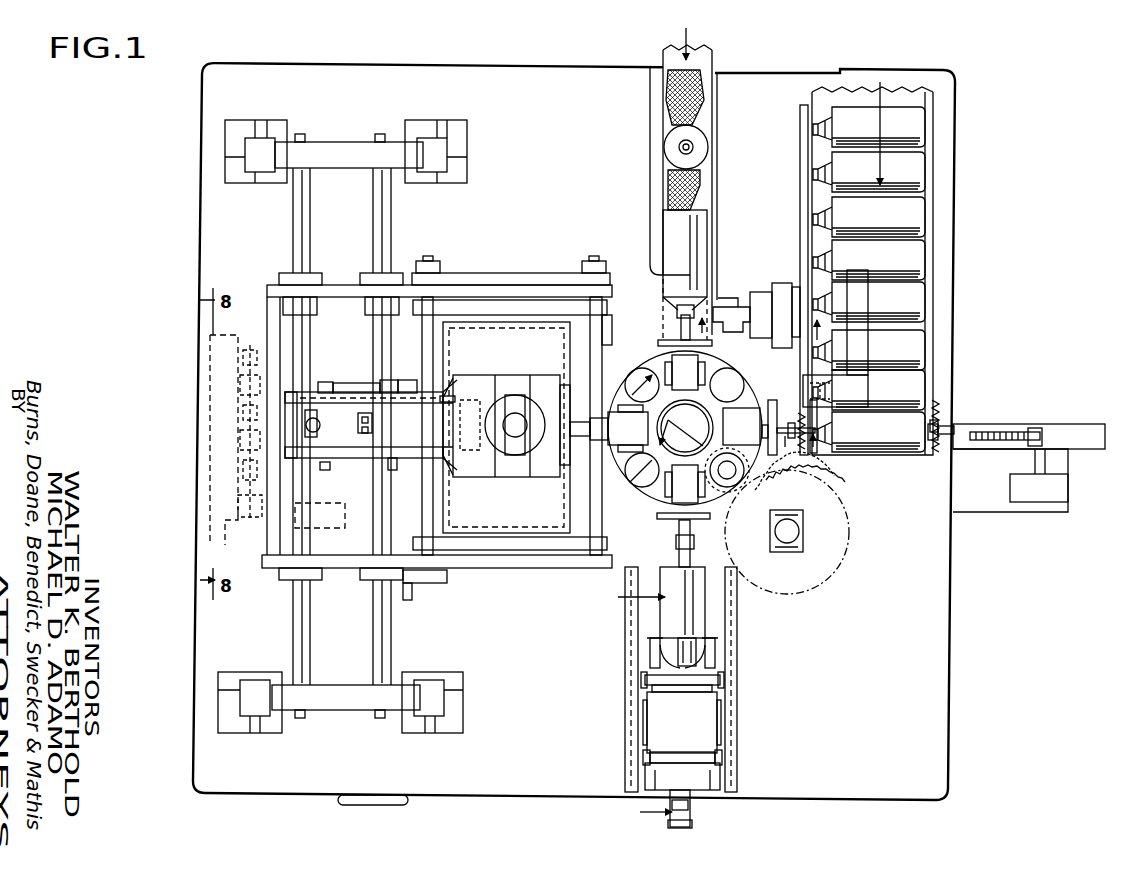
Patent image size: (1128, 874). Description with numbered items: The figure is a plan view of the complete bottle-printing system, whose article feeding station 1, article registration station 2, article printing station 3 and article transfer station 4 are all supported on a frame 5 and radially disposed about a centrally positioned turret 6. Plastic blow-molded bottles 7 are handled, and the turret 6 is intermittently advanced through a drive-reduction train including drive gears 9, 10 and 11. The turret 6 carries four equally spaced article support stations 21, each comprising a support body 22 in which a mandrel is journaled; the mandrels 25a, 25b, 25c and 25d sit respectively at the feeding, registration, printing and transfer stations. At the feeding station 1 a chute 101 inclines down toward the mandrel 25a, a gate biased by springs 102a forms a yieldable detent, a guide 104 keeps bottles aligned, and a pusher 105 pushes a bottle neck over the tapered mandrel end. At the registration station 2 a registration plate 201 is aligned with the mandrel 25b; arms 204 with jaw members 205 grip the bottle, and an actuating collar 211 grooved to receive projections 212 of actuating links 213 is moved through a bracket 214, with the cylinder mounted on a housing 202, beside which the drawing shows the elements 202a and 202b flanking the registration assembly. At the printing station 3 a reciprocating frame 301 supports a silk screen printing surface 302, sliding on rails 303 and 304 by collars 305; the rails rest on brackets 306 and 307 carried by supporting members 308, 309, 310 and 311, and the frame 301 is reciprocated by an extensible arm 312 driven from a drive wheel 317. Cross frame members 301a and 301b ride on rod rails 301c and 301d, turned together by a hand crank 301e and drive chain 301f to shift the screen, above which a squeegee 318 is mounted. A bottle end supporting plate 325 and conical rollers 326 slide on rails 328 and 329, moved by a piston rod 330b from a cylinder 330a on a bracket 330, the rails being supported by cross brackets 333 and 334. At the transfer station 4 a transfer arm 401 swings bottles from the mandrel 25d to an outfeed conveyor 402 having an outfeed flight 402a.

The article feeding station 1 is at (1000, 218).
The article registration station 2 is at (808, 722).
The article printing station 3 is at (498, 639).
The article transfer station 4 is at (742, 226).
The frame 5 is at (958, 600).
The turret 6 is at (745, 372).
The bottles 7 is at (672, 150).
The drive gear 9 is at (850, 512).
The drive gear 10 is at (770, 478).
The drive gear 11 is at (642, 470).
The article support stations 21 is at (672, 365).
The support body 22 is at (760, 428).
The mandrel 25a is at (772, 418).
The mandrel 25b is at (676, 545).
The mandrel 25c is at (585, 445).
The mandrel 25d is at (678, 312).
The chute 101 is at (934, 173).
The springs 102a is at (935, 405).
The guide 104 is at (860, 302).
The pusher 105 is at (945, 428).
The registration plate 201 is at (697, 656).
The housing 202 is at (662, 722).
The guide rail 202a is at (625, 628).
The guide rail 202b is at (737, 628).
The arms 204 is at (662, 660).
The jaw members 205 is at (650, 642).
The actuating collar 211 is at (683, 692).
The projections 212 is at (645, 680).
The actuating links 213 is at (650, 762).
The bracket 214 is at (720, 788).
The frame 301 is at (340, 283).
The cross frame member 301a is at (525, 305).
The cross frame member 301b is at (500, 545).
The rail 301c is at (445, 348).
The rail 301d is at (626, 334).
The hand crank 301e is at (440, 585).
The drive chain 301f is at (500, 270).
The silk screen printing surface 302 is at (428, 300).
The rail 303 is at (292, 210).
The rail 304 is at (392, 212).
The slidable collars 305 is at (286, 272).
The bracket 306 is at (340, 140).
The bracket 307 is at (350, 712).
The supporting member 308 is at (252, 118).
The supporting member 309 is at (452, 118).
The supporting member 310 is at (245, 732).
The supporting member 311 is at (450, 732).
The axially extensible arm 312 is at (238, 438).
The drive wheel 317 is at (248, 522).
The squeegee 318 is at (322, 520).
The bottle end supporting plate 325 is at (445, 392).
The conical rollers 326 is at (470, 400).
The rail 328 is at (362, 465).
The rail 329 is at (348, 383).
The bracket 330 is at (358, 414).
The cylinder 330a is at (368, 432).
The piston rod 330b is at (368, 422).
The cross bracket 333 is at (325, 382).
The cross bracket 334 is at (570, 385).
The transfer arm 401 is at (690, 270).
The outfeed conveyor 402 is at (715, 120).
The outfeed flight 402a is at (720, 58).